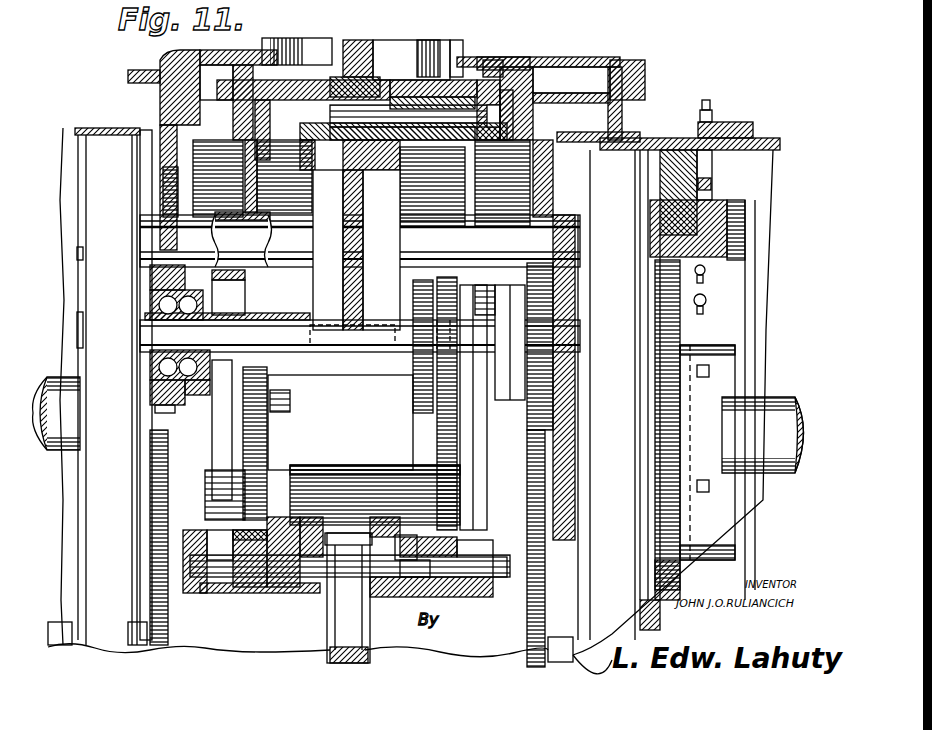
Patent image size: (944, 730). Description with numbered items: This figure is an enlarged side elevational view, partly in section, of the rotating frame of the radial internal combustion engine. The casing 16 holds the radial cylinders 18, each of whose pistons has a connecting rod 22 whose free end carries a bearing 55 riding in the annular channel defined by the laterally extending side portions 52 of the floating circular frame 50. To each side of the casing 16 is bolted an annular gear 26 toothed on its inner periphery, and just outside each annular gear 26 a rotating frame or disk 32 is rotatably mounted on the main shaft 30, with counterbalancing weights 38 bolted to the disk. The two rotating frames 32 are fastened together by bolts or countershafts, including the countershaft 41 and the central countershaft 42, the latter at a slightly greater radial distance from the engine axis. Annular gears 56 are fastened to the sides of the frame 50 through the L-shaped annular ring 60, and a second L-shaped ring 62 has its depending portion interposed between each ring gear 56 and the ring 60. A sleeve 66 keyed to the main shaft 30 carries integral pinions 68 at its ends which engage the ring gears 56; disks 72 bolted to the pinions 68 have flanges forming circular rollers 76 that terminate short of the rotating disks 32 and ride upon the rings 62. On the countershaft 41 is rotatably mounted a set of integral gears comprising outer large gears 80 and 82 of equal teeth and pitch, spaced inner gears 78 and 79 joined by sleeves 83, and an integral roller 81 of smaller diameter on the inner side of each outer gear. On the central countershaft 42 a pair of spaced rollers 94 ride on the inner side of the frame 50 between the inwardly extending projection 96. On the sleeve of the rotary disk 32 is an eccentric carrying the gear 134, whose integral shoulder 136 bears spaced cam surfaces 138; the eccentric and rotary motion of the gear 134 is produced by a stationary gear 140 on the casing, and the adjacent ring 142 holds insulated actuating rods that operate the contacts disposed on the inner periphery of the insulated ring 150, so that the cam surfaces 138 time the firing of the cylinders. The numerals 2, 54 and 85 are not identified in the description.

The housing side plate 2 is at (100, 386).
The casing 16 is at (172, 62).
The radial cylinder 18 is at (305, 45).
The connecting rod 22 is at (343, 53).
The annular gear 26 is at (553, 208).
The main shaft 30 is at (418, 425).
The rotating frame 32 is at (367, 388).
The counterbalancing weight 38 is at (55, 625).
The countershaft 41 is at (360, 332).
The central countershaft 42 is at (360, 239).
The floating circular frame 50 is at (325, 490).
The side portion 52 is at (262, 590).
The gear 54 is at (437, 170).
The bearing 55 is at (377, 90).
The annular gear 56 is at (263, 157).
The annular ring 60 is at (515, 117).
The ring 62 is at (200, 180).
The sleeve 66 is at (340, 422).
The pinion 68 is at (268, 425).
The disk 72 is at (233, 477).
The circular roller 76 is at (349, 407).
The inner gear 78 is at (412, 397).
The inner gear 79 is at (292, 398).
The outer large gear 80 is at (530, 430).
The roller 81 is at (195, 402).
The outer large gear 82 is at (170, 405).
The sleeve 83 is at (483, 309).
The key 85 is at (380, 336).
The roller 94 is at (356, 250).
The inwardly extending projection 96 is at (357, 490).
The gear 134 is at (660, 333).
The integral shoulder 136 is at (705, 345).
The cam surface 138 is at (712, 370).
The stationary gear 140 is at (705, 318).
The ring 142 is at (718, 240).
The insulated ring 150 is at (740, 124).